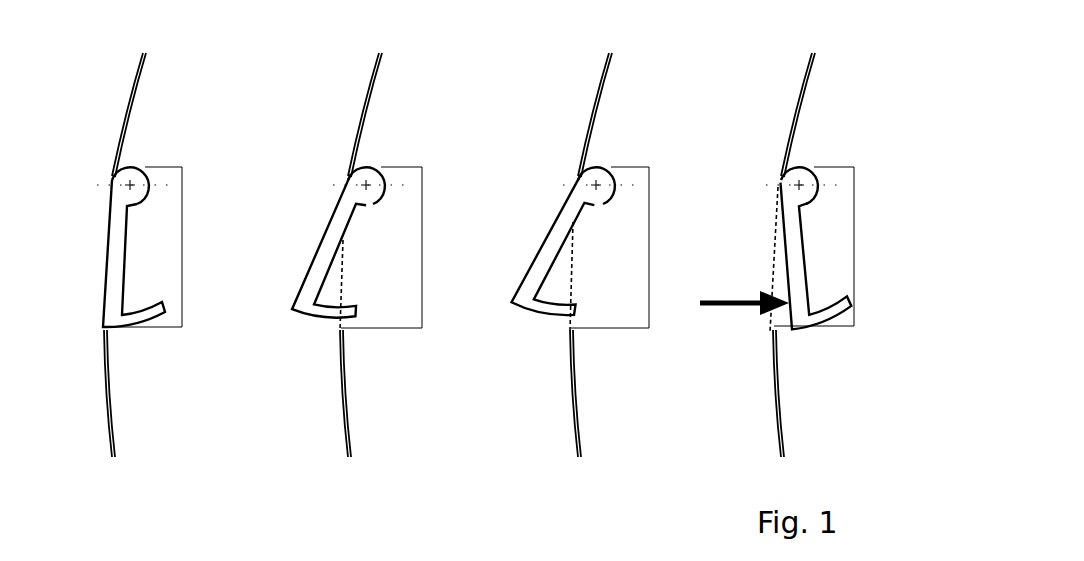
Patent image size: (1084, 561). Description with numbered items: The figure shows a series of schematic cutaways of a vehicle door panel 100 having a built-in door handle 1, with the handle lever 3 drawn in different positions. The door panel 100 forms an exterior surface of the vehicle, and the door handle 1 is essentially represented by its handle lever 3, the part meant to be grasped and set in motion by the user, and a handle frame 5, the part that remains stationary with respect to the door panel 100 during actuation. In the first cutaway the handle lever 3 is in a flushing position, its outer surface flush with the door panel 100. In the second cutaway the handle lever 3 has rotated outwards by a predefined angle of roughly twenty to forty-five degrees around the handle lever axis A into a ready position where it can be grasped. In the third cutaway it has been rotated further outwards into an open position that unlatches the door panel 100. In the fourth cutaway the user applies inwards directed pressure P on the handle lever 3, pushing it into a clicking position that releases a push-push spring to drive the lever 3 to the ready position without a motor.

The door panel 100 is at (120, 114).
The door handle 1 is at (175, 135).
The handle lever 3 is at (102, 252).
The handle frame 5 is at (145, 330).
The handle lever axis A is at (471, 203).
The inwards directed pressure P is at (744, 324).